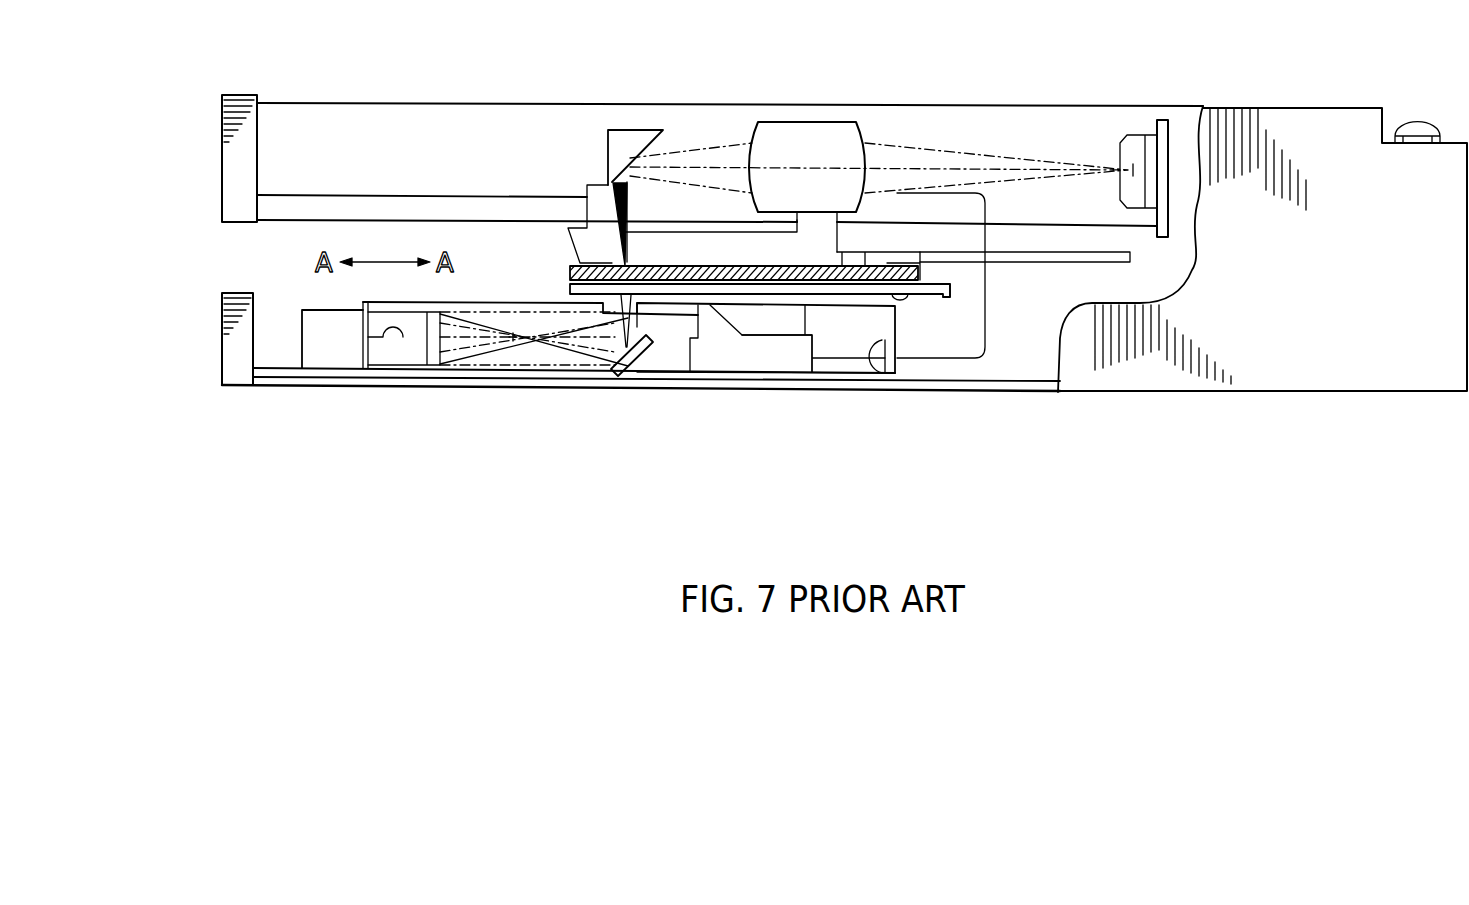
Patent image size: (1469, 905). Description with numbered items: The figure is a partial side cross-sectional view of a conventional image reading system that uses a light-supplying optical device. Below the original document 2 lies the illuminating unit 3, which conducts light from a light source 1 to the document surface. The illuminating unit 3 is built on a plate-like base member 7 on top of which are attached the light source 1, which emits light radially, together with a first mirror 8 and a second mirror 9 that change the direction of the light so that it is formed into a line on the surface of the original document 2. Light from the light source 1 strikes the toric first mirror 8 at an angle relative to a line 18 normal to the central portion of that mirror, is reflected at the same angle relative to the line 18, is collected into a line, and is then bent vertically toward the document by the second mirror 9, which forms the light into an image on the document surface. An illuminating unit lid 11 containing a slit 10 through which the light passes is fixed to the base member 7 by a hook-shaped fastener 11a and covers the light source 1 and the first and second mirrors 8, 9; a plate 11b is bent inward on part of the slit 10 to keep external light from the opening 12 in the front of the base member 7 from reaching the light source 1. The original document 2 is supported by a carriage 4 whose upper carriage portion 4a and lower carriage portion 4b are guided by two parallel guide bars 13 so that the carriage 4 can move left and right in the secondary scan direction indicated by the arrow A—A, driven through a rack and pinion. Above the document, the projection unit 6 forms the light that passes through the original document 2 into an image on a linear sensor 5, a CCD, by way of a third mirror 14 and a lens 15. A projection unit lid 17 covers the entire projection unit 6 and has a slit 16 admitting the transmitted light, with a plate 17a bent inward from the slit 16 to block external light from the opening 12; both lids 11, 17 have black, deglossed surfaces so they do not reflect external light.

The light source 1 is at (777, 362).
The original document 2 is at (862, 268).
The illuminating unit 3 is at (385, 398).
The carriage 4 is at (1000, 295).
The upper carriage portion 4a is at (720, 242).
The lower carriage portion 4b is at (942, 290).
The linear sensor 5 is at (1140, 133).
The projection unit 6 is at (1187, 100).
The base member 7 is at (815, 376).
The first mirror 8 is at (432, 368).
The second mirror 9 is at (622, 374).
The slit 10 is at (617, 307).
The illuminating unit lid 11 is at (742, 305).
The hook-shaped fastener 11a is at (403, 340).
The plate 11b is at (640, 305).
The opening 12 is at (205, 193).
The guide bars 13 is at (332, 207).
The third mirror 14 is at (628, 130).
The lens 15 is at (838, 133).
The slit 16 is at (610, 180).
The projection unit lid 17 is at (1060, 227).
The plate 17a is at (648, 213).
The line normal to the mirror 18 is at (553, 358).